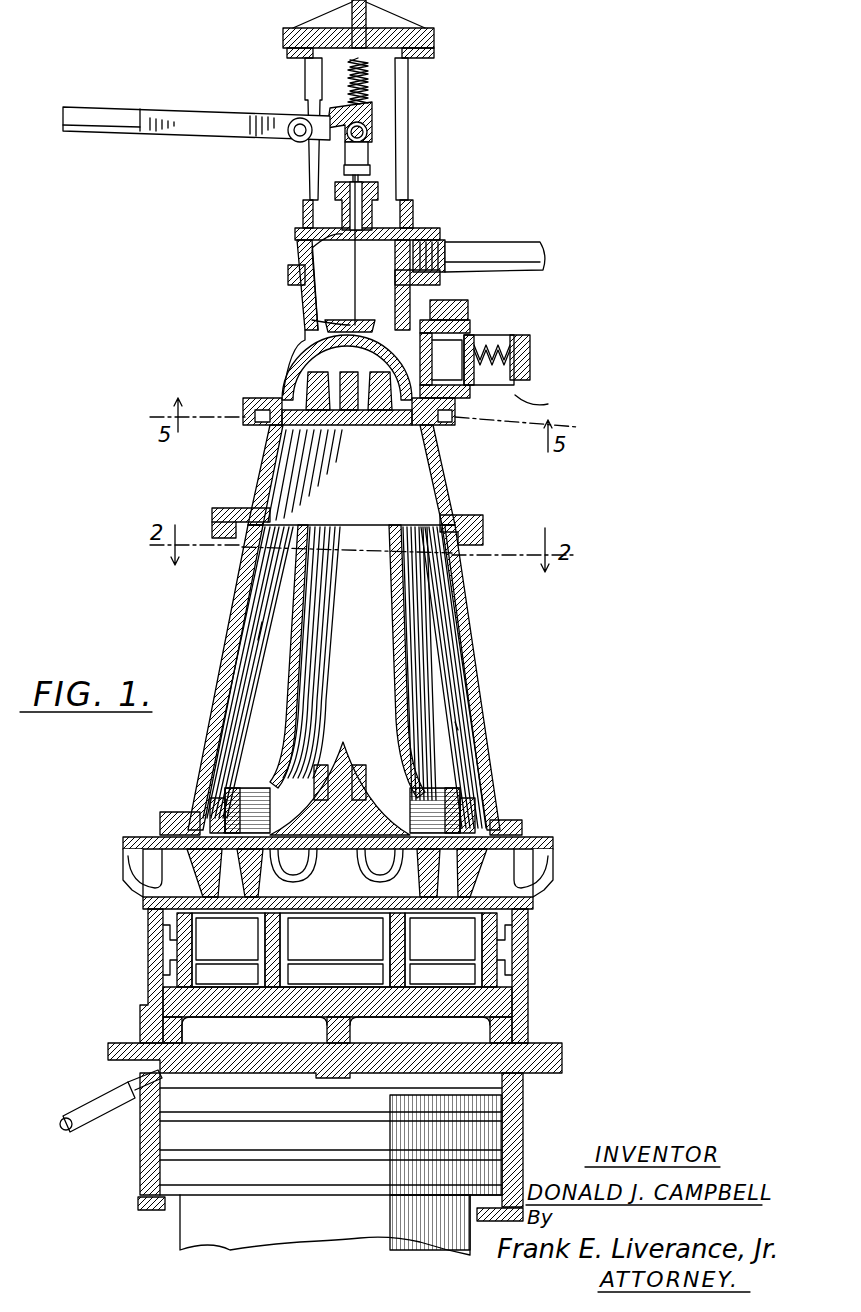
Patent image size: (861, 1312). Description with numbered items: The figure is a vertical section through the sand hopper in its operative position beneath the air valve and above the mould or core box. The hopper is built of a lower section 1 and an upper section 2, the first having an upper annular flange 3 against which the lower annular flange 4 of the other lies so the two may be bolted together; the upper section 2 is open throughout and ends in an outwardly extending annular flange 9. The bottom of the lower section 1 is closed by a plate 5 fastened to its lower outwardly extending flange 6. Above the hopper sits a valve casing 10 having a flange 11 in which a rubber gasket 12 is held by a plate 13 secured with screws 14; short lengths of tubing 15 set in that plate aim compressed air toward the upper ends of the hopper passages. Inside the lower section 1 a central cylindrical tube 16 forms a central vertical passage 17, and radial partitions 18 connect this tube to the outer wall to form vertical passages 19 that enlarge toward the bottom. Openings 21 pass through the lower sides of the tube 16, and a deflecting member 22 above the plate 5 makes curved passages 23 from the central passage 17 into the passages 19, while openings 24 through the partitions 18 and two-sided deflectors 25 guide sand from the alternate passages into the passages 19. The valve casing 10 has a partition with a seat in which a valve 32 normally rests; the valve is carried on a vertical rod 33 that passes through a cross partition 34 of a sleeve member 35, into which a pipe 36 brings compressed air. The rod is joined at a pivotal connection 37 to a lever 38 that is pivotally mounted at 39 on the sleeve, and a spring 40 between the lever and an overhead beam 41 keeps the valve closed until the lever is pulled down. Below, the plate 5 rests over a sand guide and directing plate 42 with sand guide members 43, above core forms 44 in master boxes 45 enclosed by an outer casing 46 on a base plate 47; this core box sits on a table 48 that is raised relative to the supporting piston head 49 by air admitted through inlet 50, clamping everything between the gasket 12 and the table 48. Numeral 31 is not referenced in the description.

The lower hopper section 1 is at (476, 676).
The upper hopper section 2 is at (442, 480).
The upper annular flange 3 is at (484, 538).
The lower annular flange 4 is at (484, 520).
The plate 5 is at (530, 848).
The lower outwardly extending flange 6 is at (520, 824).
The annular flange 9 is at (270, 425).
The valve casing 10 is at (300, 352).
The flange 11 is at (262, 398).
The rubber gasket 12 is at (258, 418).
The plate 13 is at (372, 420).
The securing screws 14 is at (410, 422).
The tubing 15 is at (372, 378).
The cylindrical tube 16 is at (396, 612).
The central vertical passage 17 is at (320, 652).
The radial partitions 18 is at (262, 622).
The vertical passages 19 is at (344, 677).
The openings 21 is at (286, 776).
The deflecting member 22 is at (342, 858).
The curved passages 23 is at (293, 790).
The openings 24 is at (215, 800).
The deflector 25 is at (216, 800).
The valve body 31 is at (302, 322).
The valve 32 is at (358, 332).
The vertical rod 33 is at (350, 298).
The cross partition 34 is at (300, 242).
The sleeve member 35 is at (410, 202).
The pipe 36 is at (490, 250).
The pivotal connection 37 is at (368, 131).
The lever 38 is at (236, 136).
The pivotal mounting 39 is at (300, 135).
The spring 40 is at (372, 84).
The overhead beam 41 is at (436, 38).
The sand guide and directing plate 42 is at (440, 322).
The sand guide members 43 is at (278, 882).
The core forms 44 is at (337, 950).
The master boxes 45 is at (388, 948).
The outer casing 46 is at (528, 970).
The base plate 47 is at (304, 1008).
The table 48 is at (258, 1050).
The supporting piston head 49 is at (185, 1146).
The inlet 50 is at (84, 1106).